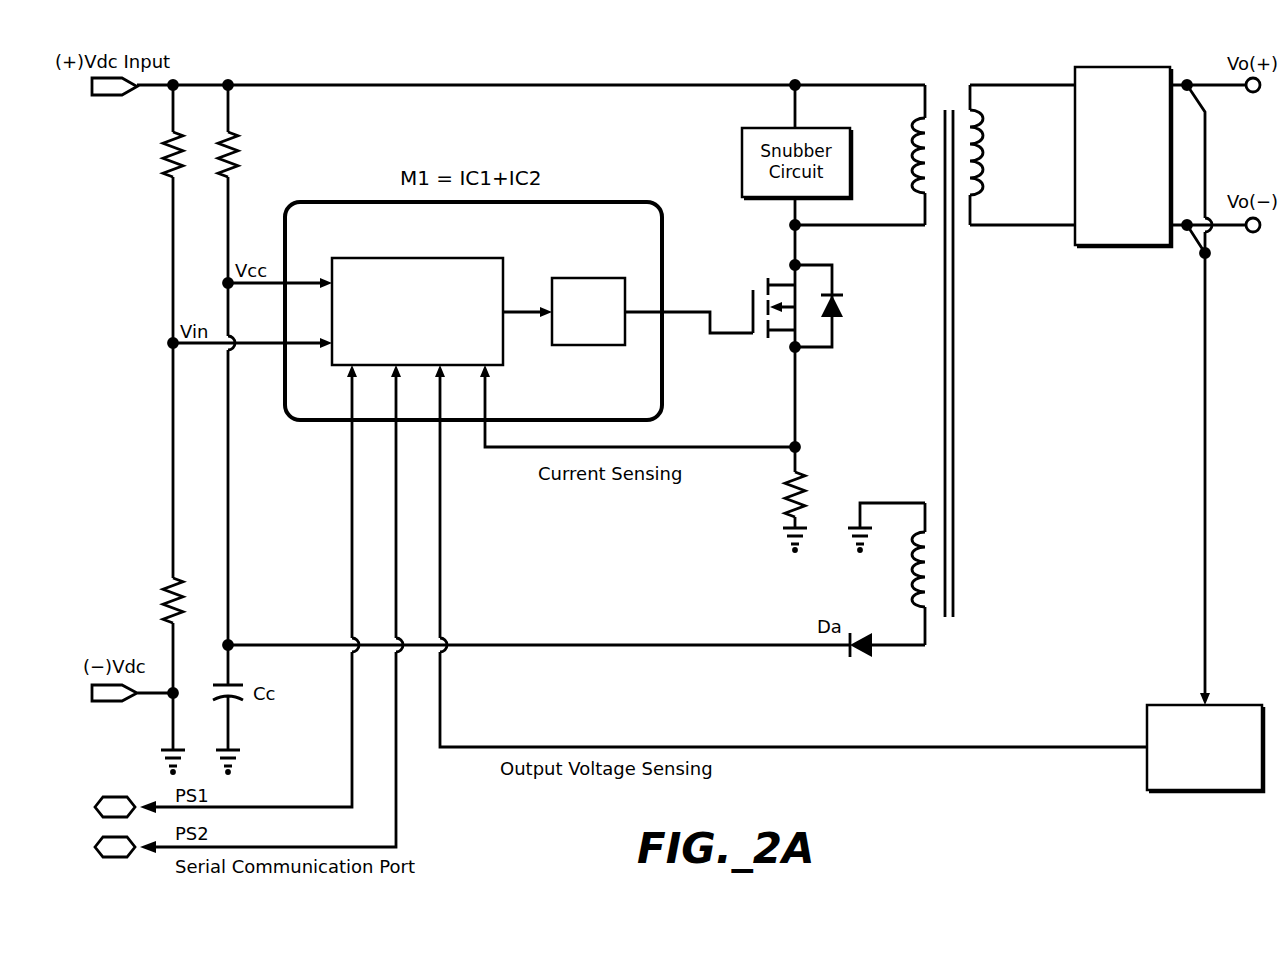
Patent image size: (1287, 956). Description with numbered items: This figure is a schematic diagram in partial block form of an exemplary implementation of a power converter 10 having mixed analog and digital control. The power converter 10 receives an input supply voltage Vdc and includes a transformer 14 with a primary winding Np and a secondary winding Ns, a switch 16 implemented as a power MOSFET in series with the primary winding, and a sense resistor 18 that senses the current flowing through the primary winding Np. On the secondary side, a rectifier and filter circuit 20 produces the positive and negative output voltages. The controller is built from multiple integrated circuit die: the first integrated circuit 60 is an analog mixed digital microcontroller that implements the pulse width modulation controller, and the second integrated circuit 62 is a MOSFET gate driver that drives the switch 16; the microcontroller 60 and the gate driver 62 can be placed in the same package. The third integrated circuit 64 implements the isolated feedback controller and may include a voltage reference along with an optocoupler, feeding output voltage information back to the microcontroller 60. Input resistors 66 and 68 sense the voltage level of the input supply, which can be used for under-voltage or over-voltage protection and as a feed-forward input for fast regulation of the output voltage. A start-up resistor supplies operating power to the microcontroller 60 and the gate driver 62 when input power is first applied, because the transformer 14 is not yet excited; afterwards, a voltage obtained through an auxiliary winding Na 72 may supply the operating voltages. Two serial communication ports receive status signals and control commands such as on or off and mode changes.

The power converter 10 is at (240, 140).
The transformer 14 is at (948, 77).
The switch 16 is at (760, 280).
The sense resistor 18 is at (810, 485).
The rectifier and filter circuit 20 is at (1143, 65).
The IC1 60 is at (373, 260).
The IC2 62 is at (607, 345).
The IC3 64 is at (1147, 765).
The input resistor 66 is at (163, 165).
The input resistor 68 is at (163, 600).
The auxiliary winding 72 is at (905, 545).